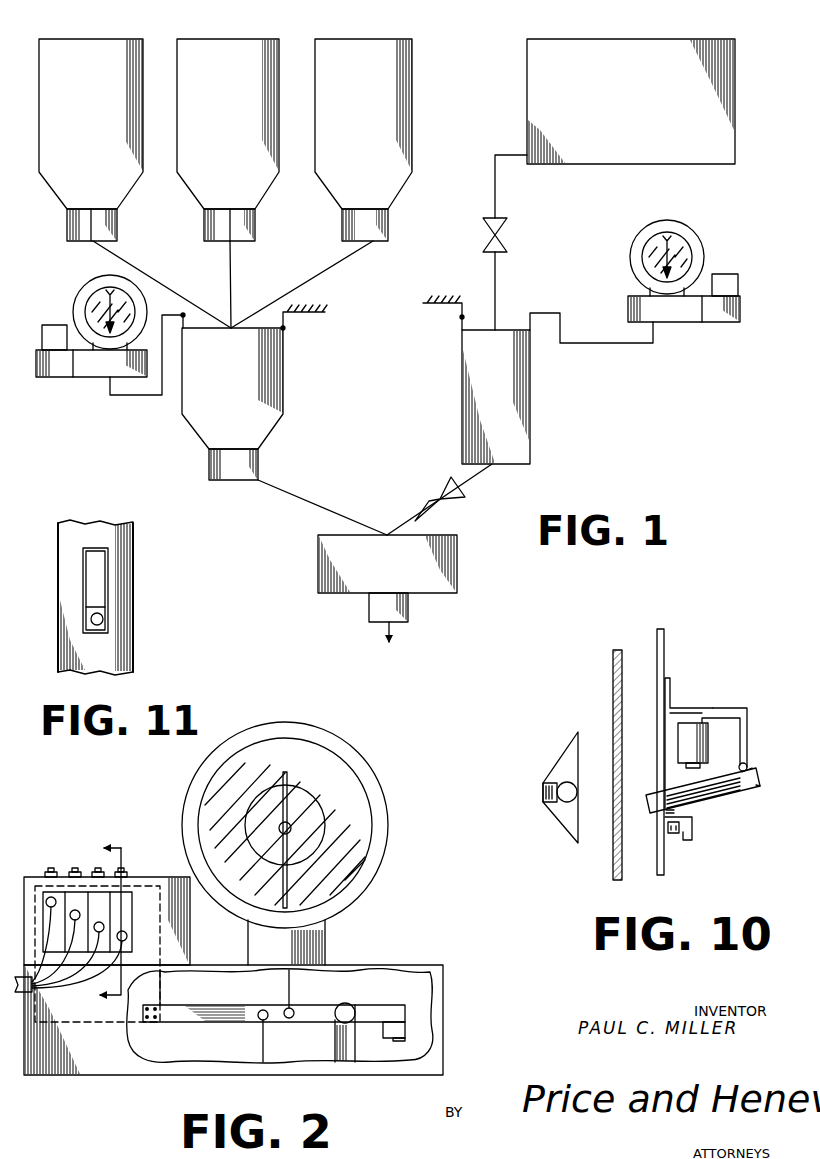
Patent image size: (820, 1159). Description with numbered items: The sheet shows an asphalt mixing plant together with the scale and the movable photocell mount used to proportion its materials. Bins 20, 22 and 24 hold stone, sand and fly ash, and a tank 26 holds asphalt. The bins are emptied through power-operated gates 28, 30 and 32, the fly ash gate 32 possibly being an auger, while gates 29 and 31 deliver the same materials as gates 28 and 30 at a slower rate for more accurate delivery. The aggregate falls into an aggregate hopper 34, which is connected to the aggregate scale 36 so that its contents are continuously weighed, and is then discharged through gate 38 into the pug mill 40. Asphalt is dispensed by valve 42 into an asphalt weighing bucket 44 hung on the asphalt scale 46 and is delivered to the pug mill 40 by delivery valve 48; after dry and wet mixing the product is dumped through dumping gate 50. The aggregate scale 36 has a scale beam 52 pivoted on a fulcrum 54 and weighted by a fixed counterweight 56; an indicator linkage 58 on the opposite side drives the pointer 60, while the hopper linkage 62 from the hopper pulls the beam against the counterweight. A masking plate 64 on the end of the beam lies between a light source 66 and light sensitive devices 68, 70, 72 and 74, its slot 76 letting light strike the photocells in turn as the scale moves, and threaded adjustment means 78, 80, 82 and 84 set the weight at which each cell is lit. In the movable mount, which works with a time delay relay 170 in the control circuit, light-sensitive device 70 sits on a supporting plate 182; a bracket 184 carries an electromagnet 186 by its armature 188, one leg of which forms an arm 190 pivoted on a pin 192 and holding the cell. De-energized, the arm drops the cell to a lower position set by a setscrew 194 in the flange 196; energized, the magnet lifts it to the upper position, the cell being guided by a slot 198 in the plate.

In FIG. 1, the bin 20 is at (80, 55).
In FIG. 1, the bin 22 is at (243, 21).
In FIG. 1, the bin 24 is at (380, 21).
In FIG. 1, the tank 26 is at (616, 55).
In FIG. 1, the power-operated gate 28 is at (80, 238).
In FIG. 1, the gate 29 is at (107, 236).
In FIG. 1, the power-operated gate 30 is at (216, 233).
In FIG. 1, the gate 31 is at (243, 236).
In FIG. 1, the fly ash gate 32 is at (372, 240).
In FIG. 1, the aggregate hopper 34 is at (277, 375).
In FIG. 1, the aggregate scale 36 is at (88, 372).
In FIG. 2, the aggregate scale 36 is at (393, 772).
In FIG. 1, the gate 38 is at (253, 464).
In FIG. 1, the pug mill 40 is at (442, 568).
In FIG. 1, the valve 42 is at (497, 230).
In FIG. 1, the asphalt weighing tank or bucket 44 is at (520, 420).
In FIG. 1, the asphalt scale 46 is at (674, 326).
In FIG. 1, the delivery valve 48 is at (440, 492).
In FIG. 1, the dumping gate 50 is at (410, 606).
In FIG. 2, the scale beam 52 is at (212, 1010).
In FIG. 2, the fulcrum 54 is at (351, 1003).
In FIG. 2, the fixed counterweight 56 is at (400, 1026).
In FIG. 2, the indicator linkage 58 is at (292, 990).
In FIG. 2, the pointer 60 is at (283, 780).
In FIG. 2, the hopper linkage 62 is at (266, 1046).
In FIG. 2, the masking plate 64 is at (153, 998).
In FIG. 10, the masking plate 64 is at (615, 866).
In FIG. 10, the light source 66 is at (575, 787).
In FIG. 2, the light sensitive device 68 is at (56, 903).
In FIG. 11, the light sensitive device 70 is at (98, 600).
In FIG. 2, the light sensitive device 70 is at (80, 915).
In FIG. 2, the light sensitive device 72 is at (104, 924).
In FIG. 2, the light sensitive device 74 is at (126, 940).
In FIG. 10, the slot 76 is at (621, 810).
In FIG. 2, the threaded adjustment means 78 is at (122, 872).
In FIG. 2, the threaded adjustment means 80 is at (97, 872).
In FIG. 2, the threaded adjustment means 82 is at (75, 872).
In FIG. 2, the threaded adjustment means 84 is at (50, 872).
In FIG. 10, the time delay relay 170 is at (708, 792).
In FIG. 11, the supporting plate 182 is at (123, 552).
In FIG. 10, the supporting plate 182 is at (659, 862).
In FIG. 10, the bracket 184 is at (678, 710).
In FIG. 10, the electromagnet 186 is at (728, 742).
In FIG. 10, the armature 188 is at (762, 706).
In FIG. 10, the arm 190 is at (740, 790).
In FIG. 10, the pin 192 is at (748, 765).
In FIG. 10, the setscrew 194 is at (675, 835).
In FIG. 10, the flange 196 is at (693, 832).
In FIG. 11, the slot 198 is at (108, 585).